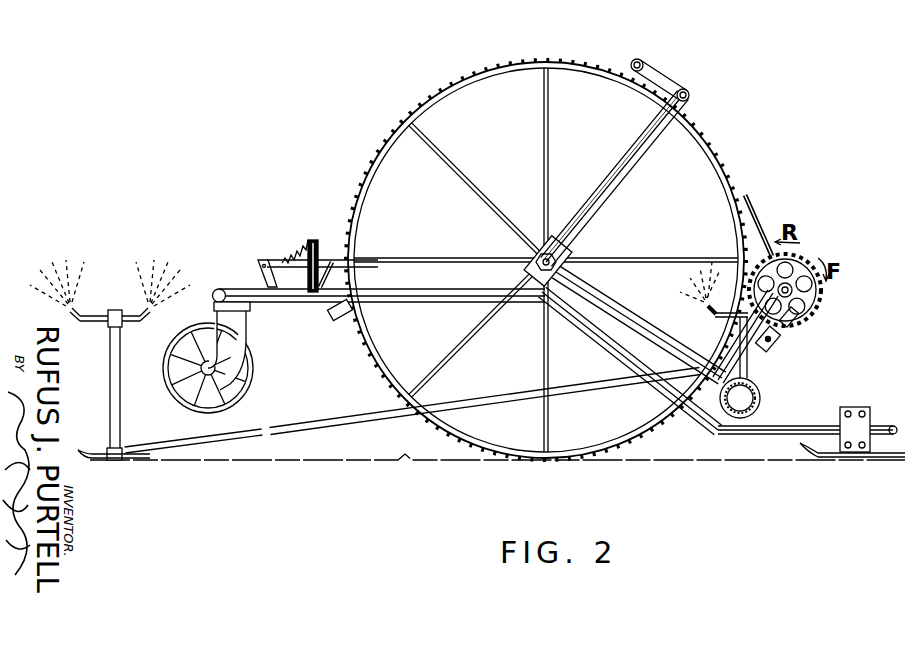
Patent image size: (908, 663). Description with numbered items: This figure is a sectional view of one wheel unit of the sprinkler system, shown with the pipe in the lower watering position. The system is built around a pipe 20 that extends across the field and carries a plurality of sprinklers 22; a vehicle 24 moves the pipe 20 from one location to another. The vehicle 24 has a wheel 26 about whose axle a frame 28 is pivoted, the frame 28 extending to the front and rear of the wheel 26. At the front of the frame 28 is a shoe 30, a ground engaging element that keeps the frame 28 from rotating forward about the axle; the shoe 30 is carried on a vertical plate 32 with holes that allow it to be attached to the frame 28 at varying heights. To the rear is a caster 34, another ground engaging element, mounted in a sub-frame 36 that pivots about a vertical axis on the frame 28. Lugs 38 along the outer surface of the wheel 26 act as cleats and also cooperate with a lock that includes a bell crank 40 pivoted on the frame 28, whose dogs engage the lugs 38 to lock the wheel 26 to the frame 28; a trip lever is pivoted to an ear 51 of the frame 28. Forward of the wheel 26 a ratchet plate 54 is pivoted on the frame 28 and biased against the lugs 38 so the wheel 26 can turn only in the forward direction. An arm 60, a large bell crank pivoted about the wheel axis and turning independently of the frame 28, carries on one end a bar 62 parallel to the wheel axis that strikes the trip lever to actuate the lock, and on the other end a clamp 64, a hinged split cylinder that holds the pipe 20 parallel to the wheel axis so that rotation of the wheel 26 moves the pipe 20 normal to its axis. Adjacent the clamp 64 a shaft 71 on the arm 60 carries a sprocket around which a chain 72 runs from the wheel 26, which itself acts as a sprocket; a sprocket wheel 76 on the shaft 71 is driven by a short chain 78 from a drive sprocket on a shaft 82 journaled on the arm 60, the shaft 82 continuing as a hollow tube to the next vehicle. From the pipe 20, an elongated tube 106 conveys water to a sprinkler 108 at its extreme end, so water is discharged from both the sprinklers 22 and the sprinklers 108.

The pipe 20 is at (752, 393).
The sprinklers 22 is at (712, 310).
The vehicle 24 is at (311, 172).
The wheel 26 is at (462, 84).
The frame 28 is at (426, 291).
The shoe 30 is at (862, 450).
The vertical plate 32 is at (852, 408).
The caster 34 is at (192, 338).
The sub-frame 36 is at (233, 327).
The lugs 38 is at (456, 80).
The bell crank 40 is at (341, 308).
The ear 51 is at (258, 263).
The ratchet plate 54 is at (680, 428).
The arm 60 is at (620, 190).
The bar 62 is at (637, 58).
The clamp 64 is at (756, 404).
The shaft 71 is at (818, 290).
The chain 72 is at (746, 210).
The sprocket wheel 76 is at (800, 262).
The short chain 78 is at (793, 330).
The shaft 82 is at (775, 346).
The elongated tube 106 is at (324, 422).
The sprinkler 108 is at (138, 306).